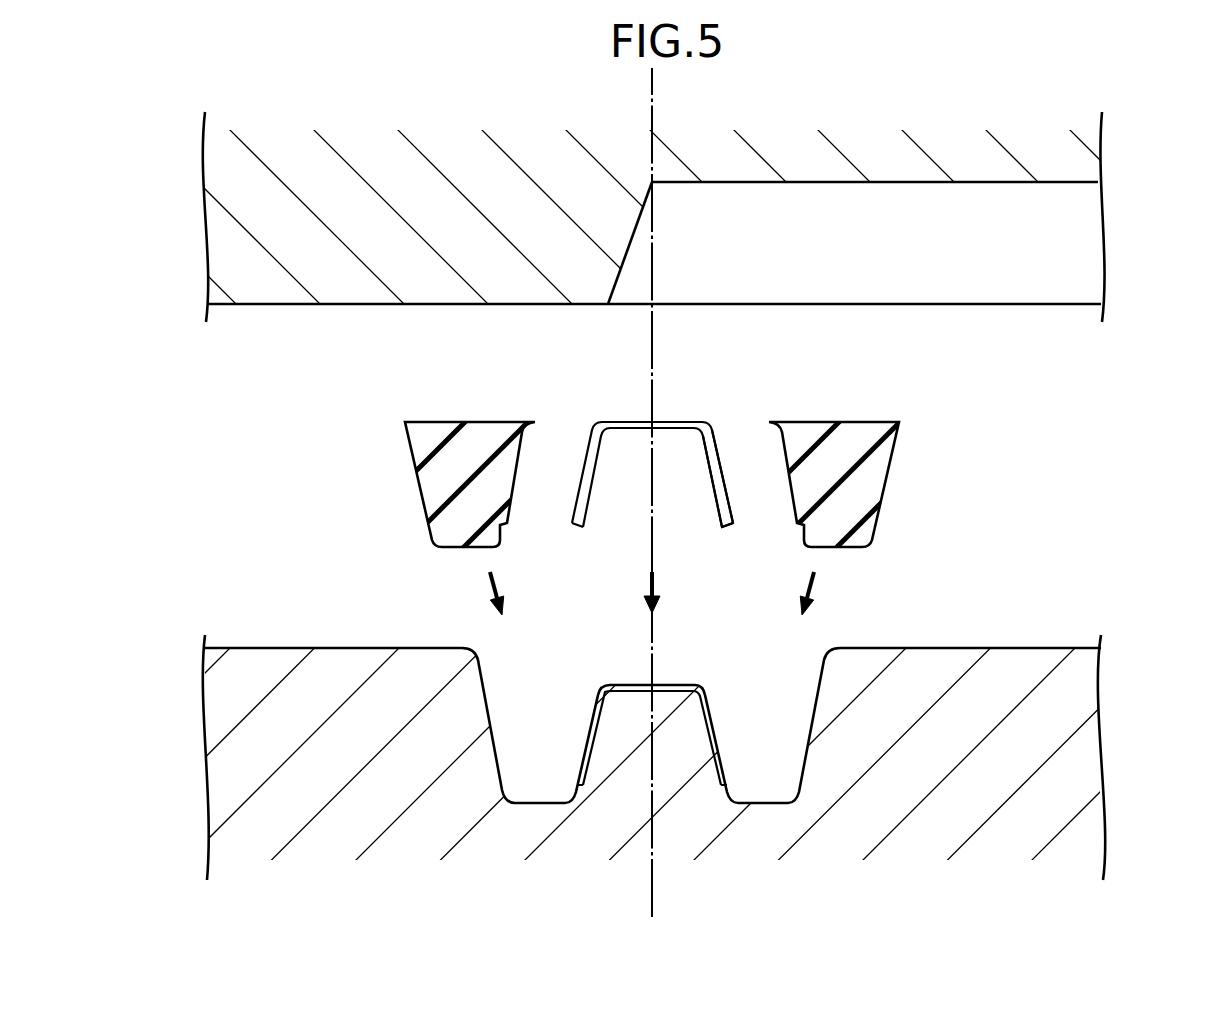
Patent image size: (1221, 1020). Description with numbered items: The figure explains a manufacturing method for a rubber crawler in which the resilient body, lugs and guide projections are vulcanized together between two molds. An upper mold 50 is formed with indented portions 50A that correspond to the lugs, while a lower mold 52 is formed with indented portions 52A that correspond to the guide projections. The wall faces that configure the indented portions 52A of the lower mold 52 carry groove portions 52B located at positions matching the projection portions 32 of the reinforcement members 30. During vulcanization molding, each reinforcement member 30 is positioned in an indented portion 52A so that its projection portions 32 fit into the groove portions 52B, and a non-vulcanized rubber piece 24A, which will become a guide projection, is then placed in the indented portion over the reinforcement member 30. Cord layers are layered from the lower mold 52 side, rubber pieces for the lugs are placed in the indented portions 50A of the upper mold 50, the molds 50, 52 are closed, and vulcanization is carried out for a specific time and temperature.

The reinforcement member 30 is at (673, 421).
The projection portion 32 is at (705, 458).
The non-vulcanized rubber piece 24A is at (888, 482).
The upper mold 50 is at (1021, 648).
The indented portion 50A is at (495, 740).
The lower mold 52 is at (1075, 263).
The indented portion 52A is at (1062, 183).
The groove portion 52B is at (586, 753).